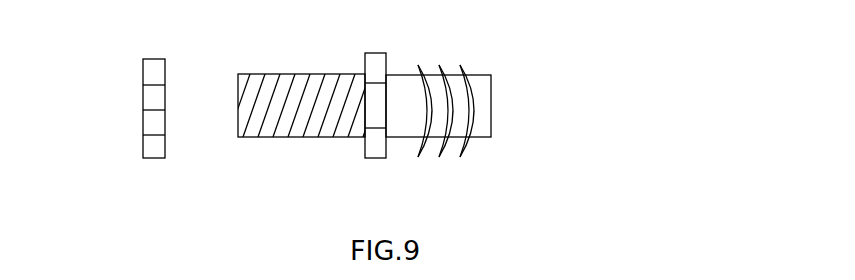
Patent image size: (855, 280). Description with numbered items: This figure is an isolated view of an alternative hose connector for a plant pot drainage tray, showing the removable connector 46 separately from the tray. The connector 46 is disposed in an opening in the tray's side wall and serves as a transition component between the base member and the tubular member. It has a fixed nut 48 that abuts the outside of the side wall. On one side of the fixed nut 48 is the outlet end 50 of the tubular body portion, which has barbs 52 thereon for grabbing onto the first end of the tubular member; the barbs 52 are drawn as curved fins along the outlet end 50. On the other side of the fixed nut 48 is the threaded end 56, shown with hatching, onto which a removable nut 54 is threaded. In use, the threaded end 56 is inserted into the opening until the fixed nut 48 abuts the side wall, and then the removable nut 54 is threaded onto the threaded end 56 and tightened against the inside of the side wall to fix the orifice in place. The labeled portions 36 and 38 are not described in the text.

The threaded shaft 36 is at (238, 107).
The shank 38 is at (497, 106).
The removable connector 46 is at (657, 69).
The fixed nut 48 is at (378, 53).
The outlet end 50 is at (503, 64).
The barbs 52 is at (442, 148).
The removable nut 54 is at (146, 102).
The threaded end 56 is at (296, 151).